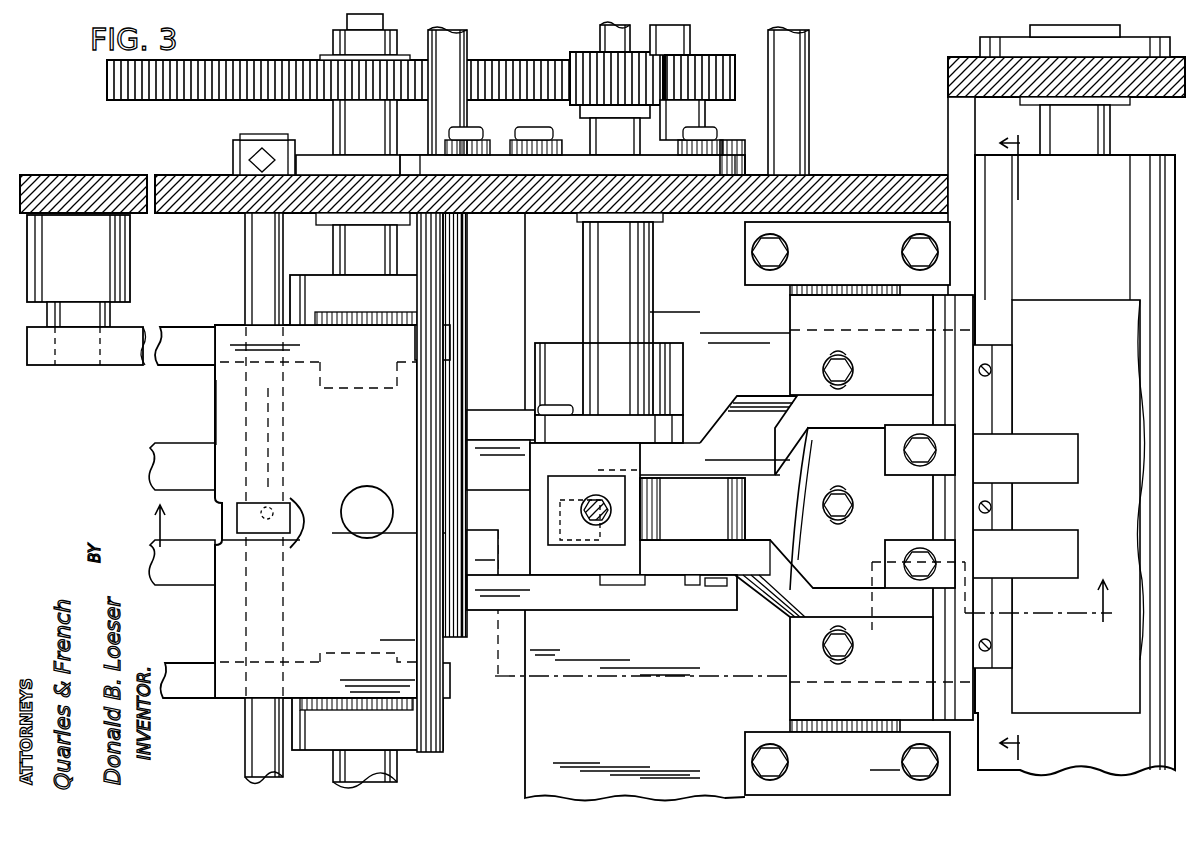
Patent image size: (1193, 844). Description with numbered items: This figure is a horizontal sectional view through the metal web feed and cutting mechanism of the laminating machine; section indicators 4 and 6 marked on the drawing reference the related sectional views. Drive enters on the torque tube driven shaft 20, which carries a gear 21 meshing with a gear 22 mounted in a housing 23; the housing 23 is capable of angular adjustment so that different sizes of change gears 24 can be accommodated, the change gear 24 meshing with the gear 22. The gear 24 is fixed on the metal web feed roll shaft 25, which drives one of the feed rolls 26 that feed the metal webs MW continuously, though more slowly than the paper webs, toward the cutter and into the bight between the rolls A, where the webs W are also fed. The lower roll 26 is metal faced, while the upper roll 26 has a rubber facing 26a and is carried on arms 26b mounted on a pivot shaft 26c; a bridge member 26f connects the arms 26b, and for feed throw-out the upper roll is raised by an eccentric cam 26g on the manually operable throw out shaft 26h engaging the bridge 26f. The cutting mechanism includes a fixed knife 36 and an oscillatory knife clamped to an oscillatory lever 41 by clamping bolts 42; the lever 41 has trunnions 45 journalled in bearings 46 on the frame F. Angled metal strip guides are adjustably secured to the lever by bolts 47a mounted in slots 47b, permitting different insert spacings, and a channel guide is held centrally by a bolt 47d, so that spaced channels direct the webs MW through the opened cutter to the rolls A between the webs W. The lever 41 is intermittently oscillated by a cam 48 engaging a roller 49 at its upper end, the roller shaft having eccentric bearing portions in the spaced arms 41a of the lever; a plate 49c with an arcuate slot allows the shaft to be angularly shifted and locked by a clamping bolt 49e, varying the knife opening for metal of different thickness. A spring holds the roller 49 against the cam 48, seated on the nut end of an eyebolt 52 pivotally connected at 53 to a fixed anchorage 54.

The torque tube driven shaft 20 is at (600, 28).
The gear 21 is at (575, 52).
The gear 22 is at (715, 60).
The housing 23 is at (735, 140).
The change gear 24 is at (210, 100).
The metal web feed roll shaft 25 is at (350, 117).
The feed roll 26 is at (445, 287).
The rubber facing 26a is at (501, 461).
The arms 26b is at (176, 327).
The pivot shaft 26c is at (80, 352).
The bridge member 26f is at (228, 412).
The eccentric cam 26g is at (247, 518).
The throw out shaft 26h is at (262, 560).
The fixed knife 36 is at (985, 402).
The oscillatory lever 41 is at (790, 603).
The spaced arms 41a is at (815, 508).
The clamping bolts 42 is at (920, 553).
The trunnions 45 is at (855, 285).
The bearings 46 is at (792, 286).
The bolts 47a is at (853, 365).
The slots 47b is at (842, 352).
The bolt 47d is at (853, 505).
The cam 48 is at (638, 487).
The roller 49 is at (698, 518).
The plate 49c is at (708, 580).
The clamping bolt 49e is at (688, 592).
The eyebolt 52 is at (605, 522).
The pivotal connection 53 is at (602, 592).
The fixed anchorage 54 is at (603, 430).
The frame F is at (162, 176).
The rolls A is at (1126, 165).
The webs W is at (1085, 305).
The metal webs MW is at (1078, 552).
The section line 4 is at (626, 561).
The section line 6 is at (1021, 441).